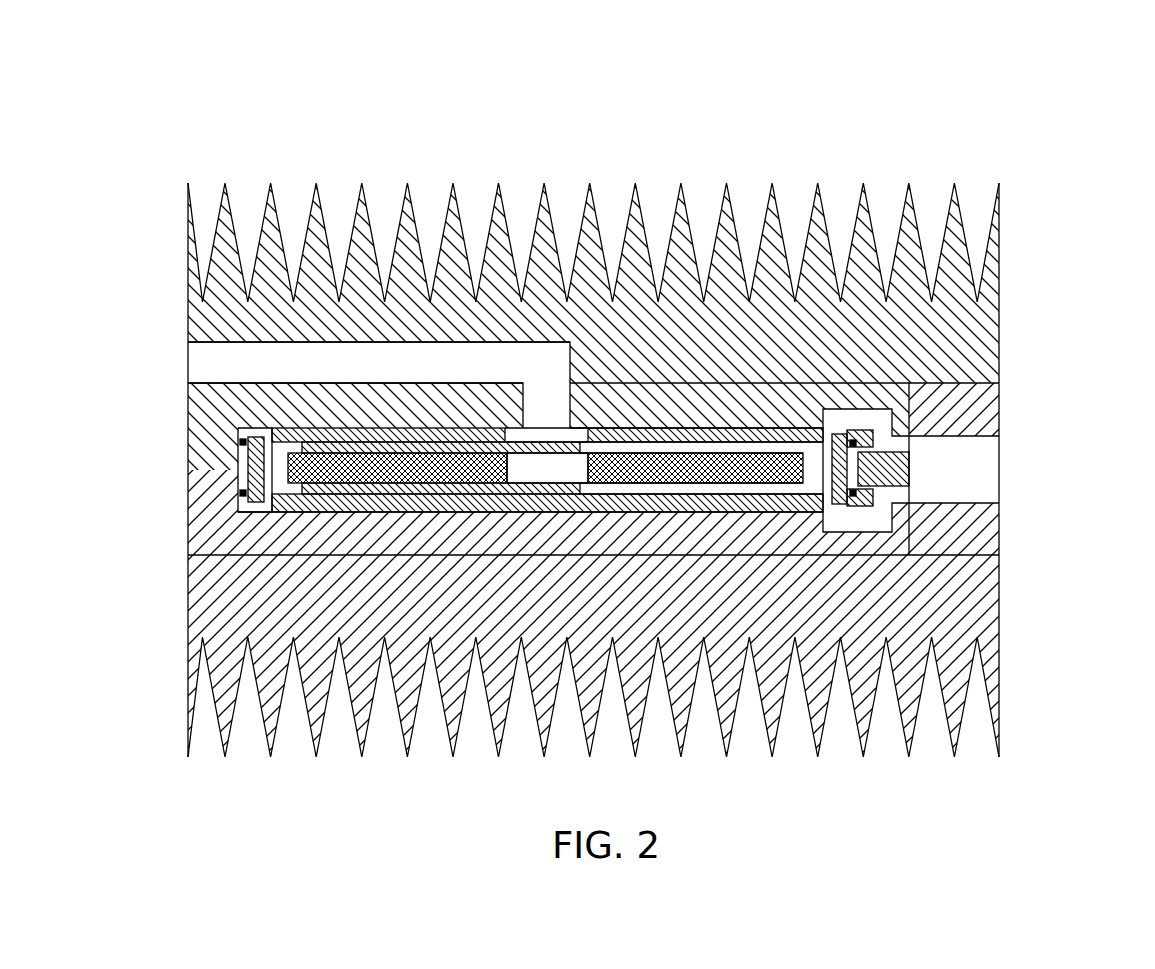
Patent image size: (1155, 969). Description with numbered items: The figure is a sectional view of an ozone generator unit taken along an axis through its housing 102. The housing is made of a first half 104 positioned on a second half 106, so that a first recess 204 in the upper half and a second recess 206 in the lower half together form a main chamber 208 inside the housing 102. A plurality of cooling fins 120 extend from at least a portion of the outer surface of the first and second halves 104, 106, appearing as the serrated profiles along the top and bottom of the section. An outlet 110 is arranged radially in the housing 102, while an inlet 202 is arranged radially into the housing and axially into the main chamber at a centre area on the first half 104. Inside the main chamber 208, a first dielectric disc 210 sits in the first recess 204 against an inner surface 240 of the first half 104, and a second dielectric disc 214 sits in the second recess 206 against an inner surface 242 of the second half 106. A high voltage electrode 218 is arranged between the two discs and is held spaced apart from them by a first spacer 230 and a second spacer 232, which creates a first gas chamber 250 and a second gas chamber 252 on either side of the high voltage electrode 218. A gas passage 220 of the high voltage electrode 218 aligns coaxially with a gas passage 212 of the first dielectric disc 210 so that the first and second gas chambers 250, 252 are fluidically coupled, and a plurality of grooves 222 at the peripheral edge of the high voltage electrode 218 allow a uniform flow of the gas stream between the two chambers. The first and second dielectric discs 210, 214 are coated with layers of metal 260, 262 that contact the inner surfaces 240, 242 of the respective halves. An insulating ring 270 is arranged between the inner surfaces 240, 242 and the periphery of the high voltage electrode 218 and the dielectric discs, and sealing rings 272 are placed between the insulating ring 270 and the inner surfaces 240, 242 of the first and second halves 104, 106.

The housing 102 is at (1000, 354).
The first half 104 is at (197, 318).
The second half 106 is at (195, 525).
The outlet 110 is at (993, 398).
The cooling fins 120 is at (410, 207).
The inlet 202 is at (195, 355).
The first recess 204 is at (238, 431).
The second recess 206 is at (238, 503).
The main chamber 208 is at (238, 466).
The first dielectric disc 210 is at (807, 430).
The gas passage 212 is at (575, 435).
The second dielectric disc 214 is at (343, 507).
The high voltage electrode 218 is at (668, 475).
The gas passage 220 is at (538, 472).
The grooves 222 is at (804, 490).
The first spacer 230 is at (332, 448).
The second spacer 232 is at (322, 494).
The inner surface 240 is at (245, 430).
The inner surface 242 is at (242, 513).
The first gas chamber 250 is at (815, 448).
The second gas chamber 252 is at (813, 473).
The layer of metal 260 is at (362, 428).
The layer of metal 262 is at (606, 512).
The insulating ring 270 is at (847, 443).
The sealing rings 272 is at (857, 495).